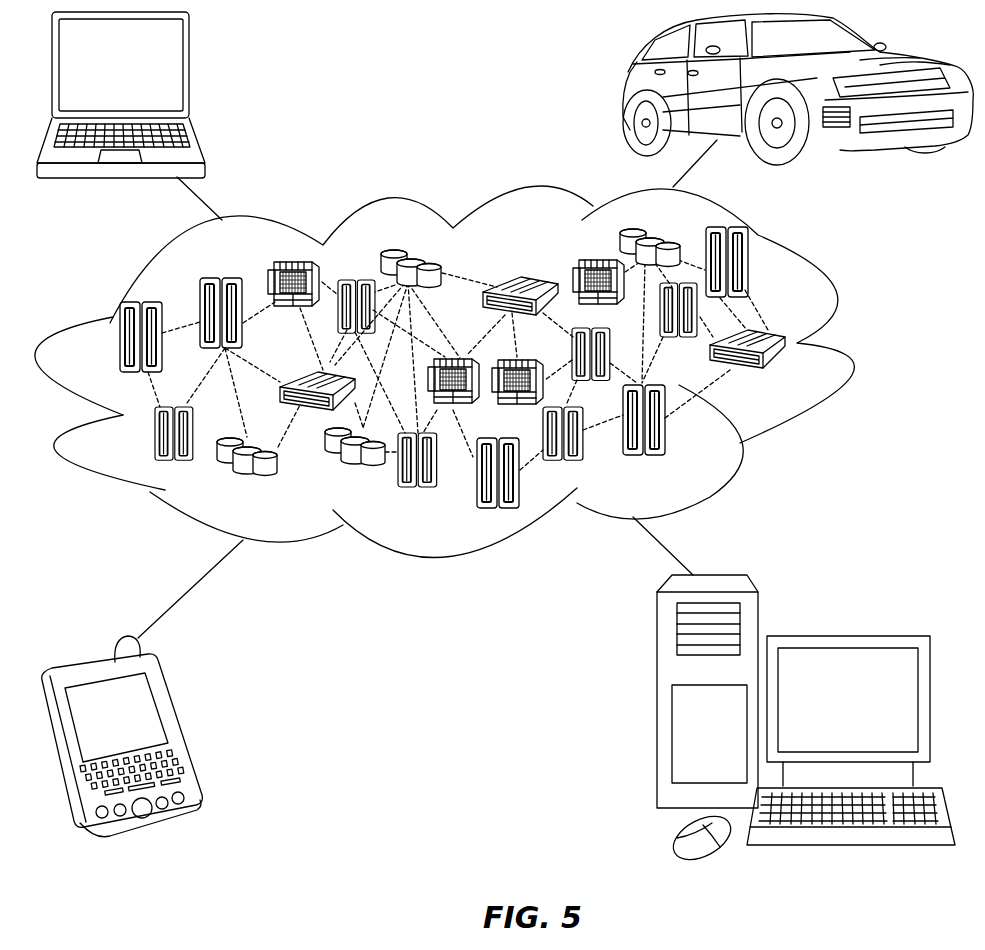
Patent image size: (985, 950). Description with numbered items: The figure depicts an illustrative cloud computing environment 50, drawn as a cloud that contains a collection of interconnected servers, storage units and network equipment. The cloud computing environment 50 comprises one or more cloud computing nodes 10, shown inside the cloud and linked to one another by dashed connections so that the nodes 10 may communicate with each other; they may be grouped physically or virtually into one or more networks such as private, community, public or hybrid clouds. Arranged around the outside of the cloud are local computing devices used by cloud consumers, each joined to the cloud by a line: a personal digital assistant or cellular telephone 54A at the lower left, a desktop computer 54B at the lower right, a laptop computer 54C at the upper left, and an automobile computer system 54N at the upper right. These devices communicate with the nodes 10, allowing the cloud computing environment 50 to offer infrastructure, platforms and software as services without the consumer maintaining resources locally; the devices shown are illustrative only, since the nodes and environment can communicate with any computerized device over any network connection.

The cloud computing node 10 is at (788, 377).
The cloud computing environment 50 is at (847, 348).
The personal digital assistant (PDA) or cellular telephone 54A is at (182, 730).
The desktop computer 54B is at (845, 635).
The laptop computer 54C is at (190, 73).
The automobile computer system 54N is at (625, 90).